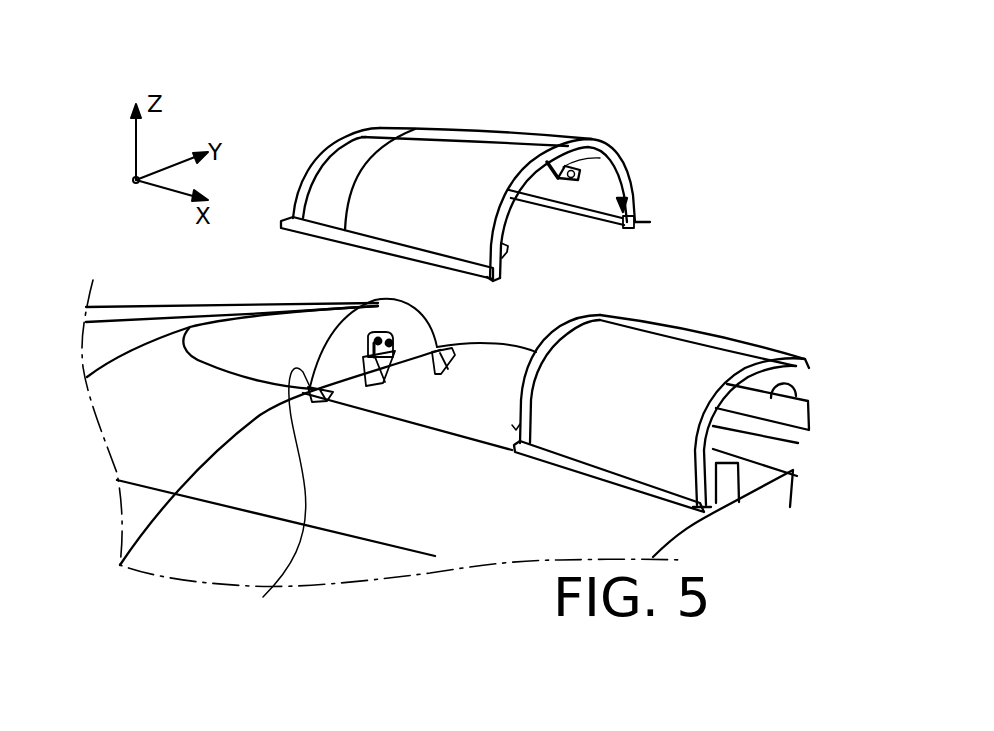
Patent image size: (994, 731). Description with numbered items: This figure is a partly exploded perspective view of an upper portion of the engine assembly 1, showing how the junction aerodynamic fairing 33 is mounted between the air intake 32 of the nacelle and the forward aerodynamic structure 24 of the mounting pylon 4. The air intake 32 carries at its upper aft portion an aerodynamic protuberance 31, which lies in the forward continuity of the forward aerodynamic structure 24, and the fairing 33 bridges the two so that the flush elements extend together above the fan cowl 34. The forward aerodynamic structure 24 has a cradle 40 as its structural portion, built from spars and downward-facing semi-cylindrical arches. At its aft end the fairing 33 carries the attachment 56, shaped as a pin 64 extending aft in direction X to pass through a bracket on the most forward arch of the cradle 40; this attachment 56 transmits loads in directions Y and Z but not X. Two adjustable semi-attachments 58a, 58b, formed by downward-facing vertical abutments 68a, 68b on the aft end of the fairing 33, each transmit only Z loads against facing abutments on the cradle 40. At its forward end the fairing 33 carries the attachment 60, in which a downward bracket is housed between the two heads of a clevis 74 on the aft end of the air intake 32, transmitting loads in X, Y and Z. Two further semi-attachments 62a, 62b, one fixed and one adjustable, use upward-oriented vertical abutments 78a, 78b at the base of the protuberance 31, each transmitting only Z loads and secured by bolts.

The engine assembly 1 is at (574, 58).
The mounting pylon 4 is at (796, 447).
The forward aerodynamic structure 24 is at (722, 331).
The aerodynamic protuberance 31 is at (218, 350).
The air intake 32 is at (118, 312).
The junction aerodynamic fairing 33 is at (490, 130).
The fan cowl 34 is at (185, 547).
The cradle 40 is at (793, 380).
The attachment 56 is at (607, 127).
The adjustable semi-attachment 58a is at (553, 251).
The adjustable semi-attachment 58b is at (669, 187).
The attachment 60 is at (304, 324).
The semi-attachment 62a is at (271, 512).
The semi-attachment 62b is at (481, 326).
The pin 64 is at (620, 110).
The vertical abutment 68a is at (562, 256).
The vertical abutment 68b is at (678, 180).
The clevis 74 is at (364, 336).
The vertical abutment 78a is at (235, 630).
The vertical abutment 78b is at (488, 312).